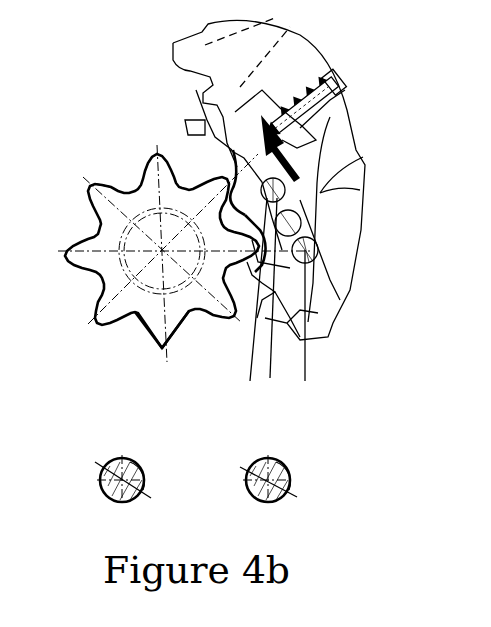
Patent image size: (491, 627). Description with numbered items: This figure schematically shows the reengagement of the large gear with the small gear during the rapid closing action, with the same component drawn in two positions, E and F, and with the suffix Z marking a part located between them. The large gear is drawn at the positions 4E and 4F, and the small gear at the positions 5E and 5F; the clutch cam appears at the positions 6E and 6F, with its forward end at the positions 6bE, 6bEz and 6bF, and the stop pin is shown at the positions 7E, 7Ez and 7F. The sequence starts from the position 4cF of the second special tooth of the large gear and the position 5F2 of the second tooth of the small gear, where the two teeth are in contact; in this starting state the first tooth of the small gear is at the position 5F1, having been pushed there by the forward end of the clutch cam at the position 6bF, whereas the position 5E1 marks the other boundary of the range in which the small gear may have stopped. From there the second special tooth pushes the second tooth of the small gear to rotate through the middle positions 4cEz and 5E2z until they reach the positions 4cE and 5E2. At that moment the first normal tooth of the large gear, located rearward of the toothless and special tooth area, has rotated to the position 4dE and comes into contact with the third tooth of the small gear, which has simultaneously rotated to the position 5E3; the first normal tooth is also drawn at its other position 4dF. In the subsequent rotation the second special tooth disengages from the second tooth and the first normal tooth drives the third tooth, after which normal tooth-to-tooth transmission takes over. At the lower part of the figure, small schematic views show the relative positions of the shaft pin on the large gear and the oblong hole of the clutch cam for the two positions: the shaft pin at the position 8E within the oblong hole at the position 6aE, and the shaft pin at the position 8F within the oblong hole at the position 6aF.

The large gear (position E) 4E is at (195, 46).
The large gear (position F) 4F is at (205, 120).
The second special tooth (position E) 4cE is at (314, 214).
The second special tooth (intermediate position) 4cEz is at (318, 256).
The second special tooth (position F) 4cF is at (292, 250).
The first normal tooth (position E) 4dE is at (255, 266).
The first normal tooth (position F) 4dF is at (287, 322).
The small gear (position E) 5E is at (167, 348).
The small gear (position F) 5F is at (160, 348).
The tooth one of small gear (position E) 5E1 is at (158, 153).
The tooth one of small gear (position F) 5F1 is at (200, 182).
The tooth two of small gear (position E) 5E2 is at (110, 203).
The tooth two of small gear (intermediate position) 5E2z is at (258, 230).
The tooth two of small gear (position F) 5F2 is at (262, 216).
The tooth three of small gear (position E) 5E3 is at (262, 238).
The clutch cam (position E) 6E is at (297, 142).
The clutch cam (position F) 6F is at (320, 193).
The oblong hole of clutch cam (position E) 6aE is at (149, 492).
The oblong hole of clutch cam (position F) 6aF is at (292, 492).
The forward end of clutch cam (position E) 6bE is at (213, 132).
The forward end of clutch cam (intermediate position) 6bEz is at (230, 177).
The forward end of clutch cam (position F) 6bF is at (260, 183).
The stop pin (position E) 7E is at (250, 383).
The stop pin (intermediate position) 7Ez is at (298, 384).
The stop pin (position F) 7F is at (332, 383).
The shaft pin on large gear (position E) 8E is at (115, 462).
The shaft pin on large gear (position F) 8F is at (261, 462).